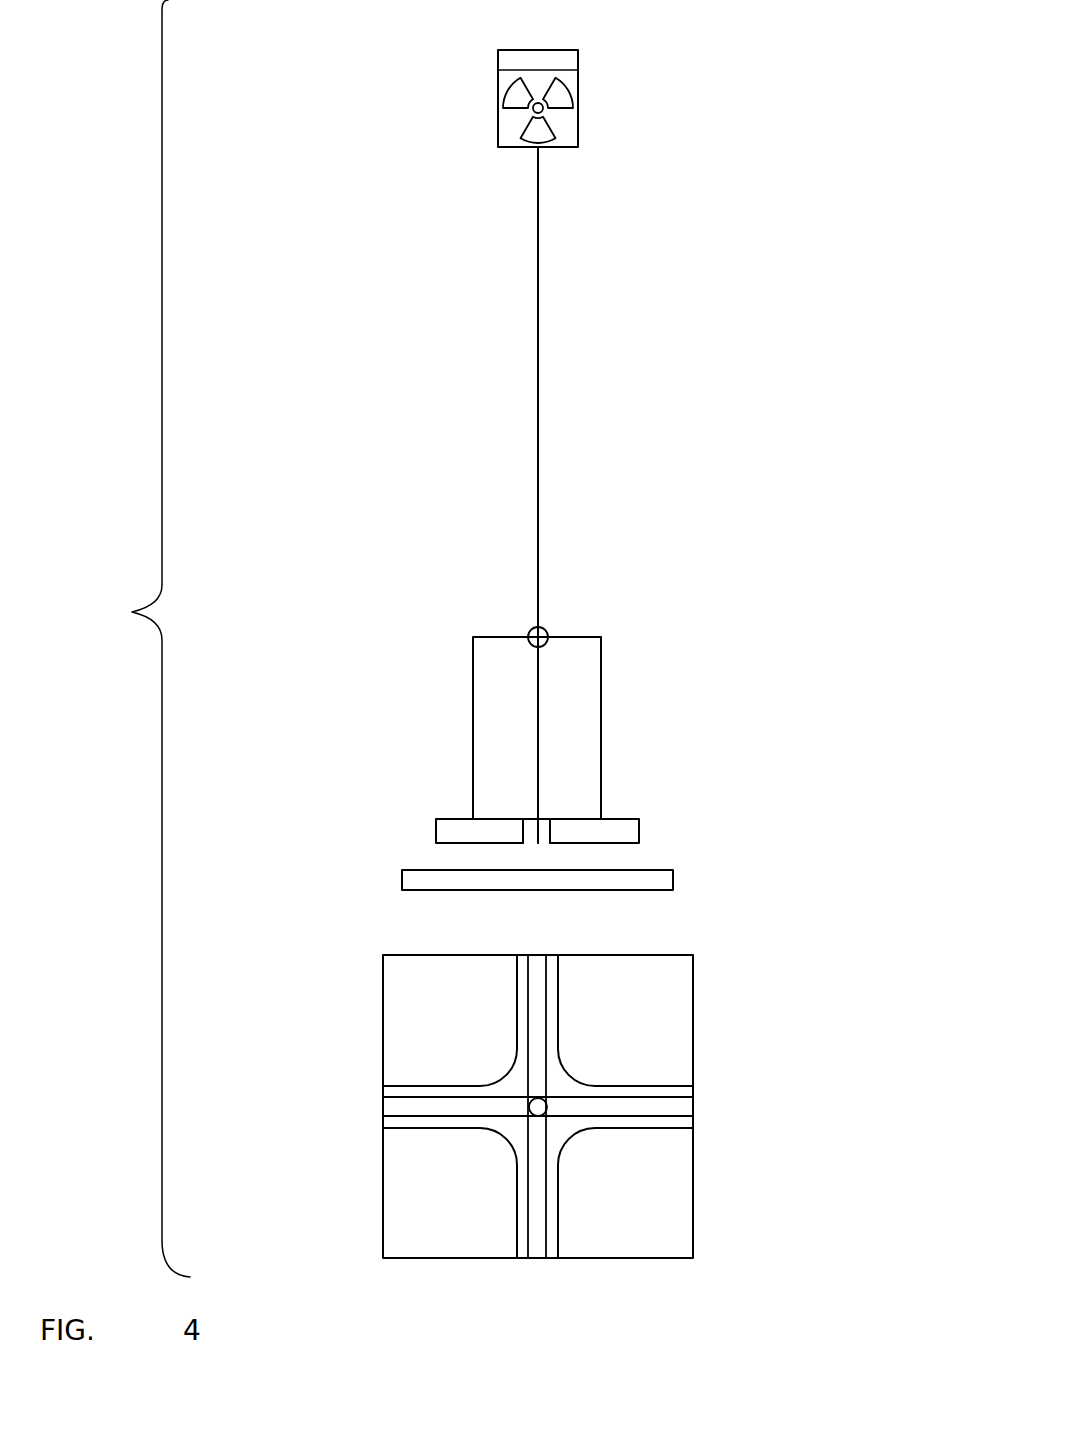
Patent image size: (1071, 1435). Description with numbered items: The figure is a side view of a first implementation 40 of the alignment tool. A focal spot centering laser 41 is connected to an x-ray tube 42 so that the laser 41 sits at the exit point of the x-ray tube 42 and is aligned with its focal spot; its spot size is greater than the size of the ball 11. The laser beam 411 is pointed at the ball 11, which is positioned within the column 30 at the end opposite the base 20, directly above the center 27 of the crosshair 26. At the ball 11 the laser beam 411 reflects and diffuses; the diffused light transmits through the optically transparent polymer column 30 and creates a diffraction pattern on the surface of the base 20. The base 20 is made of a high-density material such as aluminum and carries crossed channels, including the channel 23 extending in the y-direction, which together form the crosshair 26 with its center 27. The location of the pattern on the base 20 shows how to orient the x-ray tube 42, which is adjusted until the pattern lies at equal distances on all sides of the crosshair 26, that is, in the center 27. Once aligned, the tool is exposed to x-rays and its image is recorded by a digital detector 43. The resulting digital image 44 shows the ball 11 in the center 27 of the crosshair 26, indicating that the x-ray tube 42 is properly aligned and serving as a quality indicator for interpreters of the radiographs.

The first implementation 40 is at (365, 332).
The focal spot centering laser 41 is at (560, 57).
The x-ray tube 42 is at (570, 132).
The laser beam 411 is at (540, 284).
The ball 11 is at (546, 630).
The column 30 is at (580, 720).
The base 20 is at (632, 832).
The channel 23 is at (530, 833).
The digital detector 43 is at (663, 879).
The digital image 44 is at (743, 1068).
The crosshair 26 is at (567, 1083).
The center 27 is at (545, 1113).